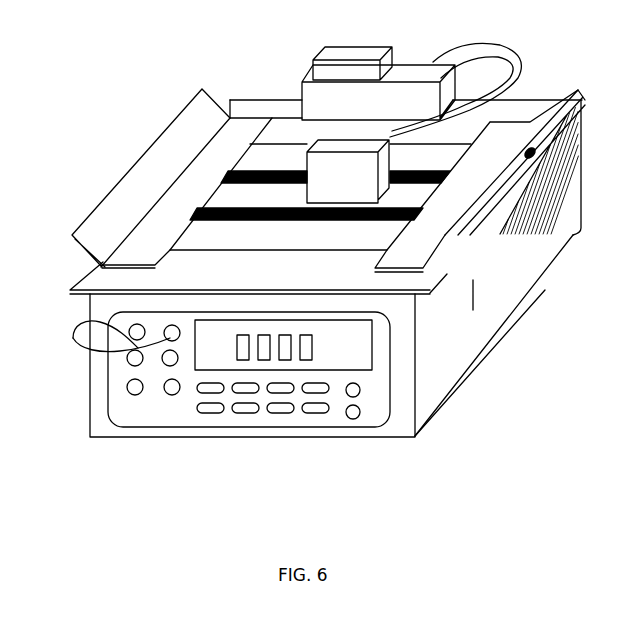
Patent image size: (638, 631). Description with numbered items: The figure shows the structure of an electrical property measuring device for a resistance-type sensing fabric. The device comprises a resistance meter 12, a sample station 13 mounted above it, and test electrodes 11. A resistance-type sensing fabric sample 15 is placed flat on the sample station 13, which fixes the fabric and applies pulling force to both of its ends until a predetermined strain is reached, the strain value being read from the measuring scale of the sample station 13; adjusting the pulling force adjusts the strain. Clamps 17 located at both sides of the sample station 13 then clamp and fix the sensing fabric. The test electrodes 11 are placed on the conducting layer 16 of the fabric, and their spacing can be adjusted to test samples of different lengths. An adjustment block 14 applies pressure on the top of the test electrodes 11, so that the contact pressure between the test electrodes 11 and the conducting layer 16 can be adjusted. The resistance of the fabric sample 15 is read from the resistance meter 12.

The test electrodes 11 is at (337, 226).
The resistance meter 12 is at (175, 413).
The sample station 13 is at (358, 273).
The adjustment block 14 is at (383, 190).
The resistance-type sensing fabric sample 15 is at (228, 227).
The conducting layer 16 is at (262, 167).
The clamps 17 is at (143, 163).